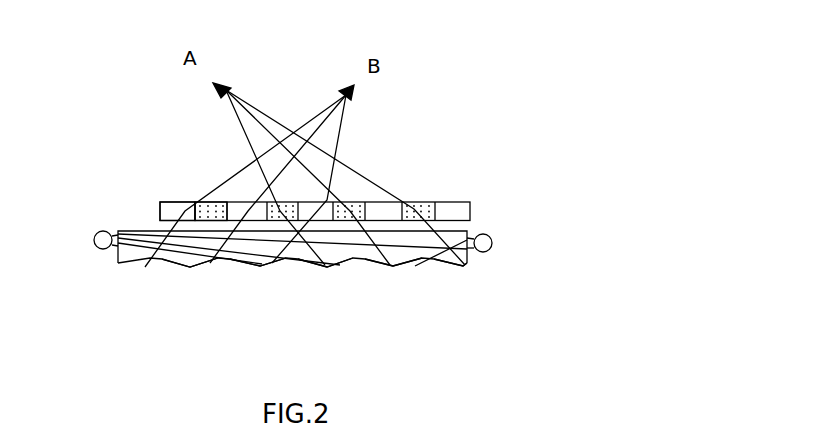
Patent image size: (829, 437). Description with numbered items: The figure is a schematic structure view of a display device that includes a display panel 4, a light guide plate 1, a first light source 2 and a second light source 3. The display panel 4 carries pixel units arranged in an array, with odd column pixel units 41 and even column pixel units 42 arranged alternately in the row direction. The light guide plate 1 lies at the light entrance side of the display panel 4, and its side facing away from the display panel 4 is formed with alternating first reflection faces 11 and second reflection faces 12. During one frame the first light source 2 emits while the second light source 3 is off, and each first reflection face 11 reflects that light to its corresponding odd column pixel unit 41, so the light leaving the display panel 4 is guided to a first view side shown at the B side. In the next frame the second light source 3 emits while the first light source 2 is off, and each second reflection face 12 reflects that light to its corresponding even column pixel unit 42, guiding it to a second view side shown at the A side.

The light guide plate 1 is at (122, 263).
The first light source 2 is at (97, 233).
The second light source 3 is at (491, 237).
The display panel 4 is at (208, 156).
The odd column pixel units 41 is at (166, 202).
The even column pixel units 42 is at (203, 202).
The first reflection faces 11 is at (146, 266).
The second reflection faces 12 is at (175, 268).